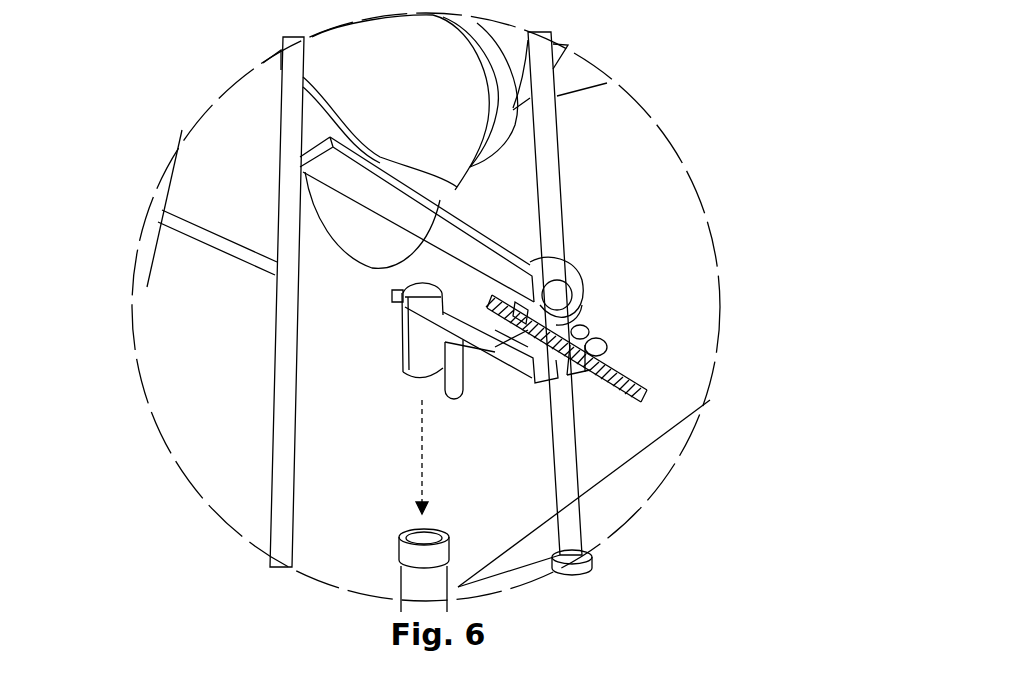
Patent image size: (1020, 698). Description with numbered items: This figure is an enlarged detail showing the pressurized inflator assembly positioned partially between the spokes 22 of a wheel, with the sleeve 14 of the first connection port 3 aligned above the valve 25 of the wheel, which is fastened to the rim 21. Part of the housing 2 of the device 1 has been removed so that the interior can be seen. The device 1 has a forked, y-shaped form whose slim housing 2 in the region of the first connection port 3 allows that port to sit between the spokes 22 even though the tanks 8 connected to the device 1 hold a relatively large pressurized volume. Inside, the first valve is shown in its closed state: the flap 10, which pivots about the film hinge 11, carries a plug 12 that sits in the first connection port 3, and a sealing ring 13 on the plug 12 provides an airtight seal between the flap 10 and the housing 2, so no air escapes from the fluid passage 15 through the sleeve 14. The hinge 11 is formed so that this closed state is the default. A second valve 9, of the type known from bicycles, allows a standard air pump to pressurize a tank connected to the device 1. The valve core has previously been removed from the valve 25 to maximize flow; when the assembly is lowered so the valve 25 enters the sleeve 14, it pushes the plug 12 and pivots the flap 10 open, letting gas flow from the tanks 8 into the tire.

The device 1 is at (490, 200).
The housing 2 is at (507, 238).
The first connection port 3 is at (317, 447).
The tanks 8 is at (575, 77).
The second valve 9 is at (620, 362).
The flap 10 is at (442, 298).
The hinge 11 is at (597, 350).
The plug 12 is at (401, 333).
The sealing ring 13 is at (403, 298).
The sleeve 14 is at (432, 370).
The fluid passage 15 is at (350, 225).
The rim 21 is at (607, 510).
The spokes 22 is at (230, 600).
The valve 25 is at (407, 582).